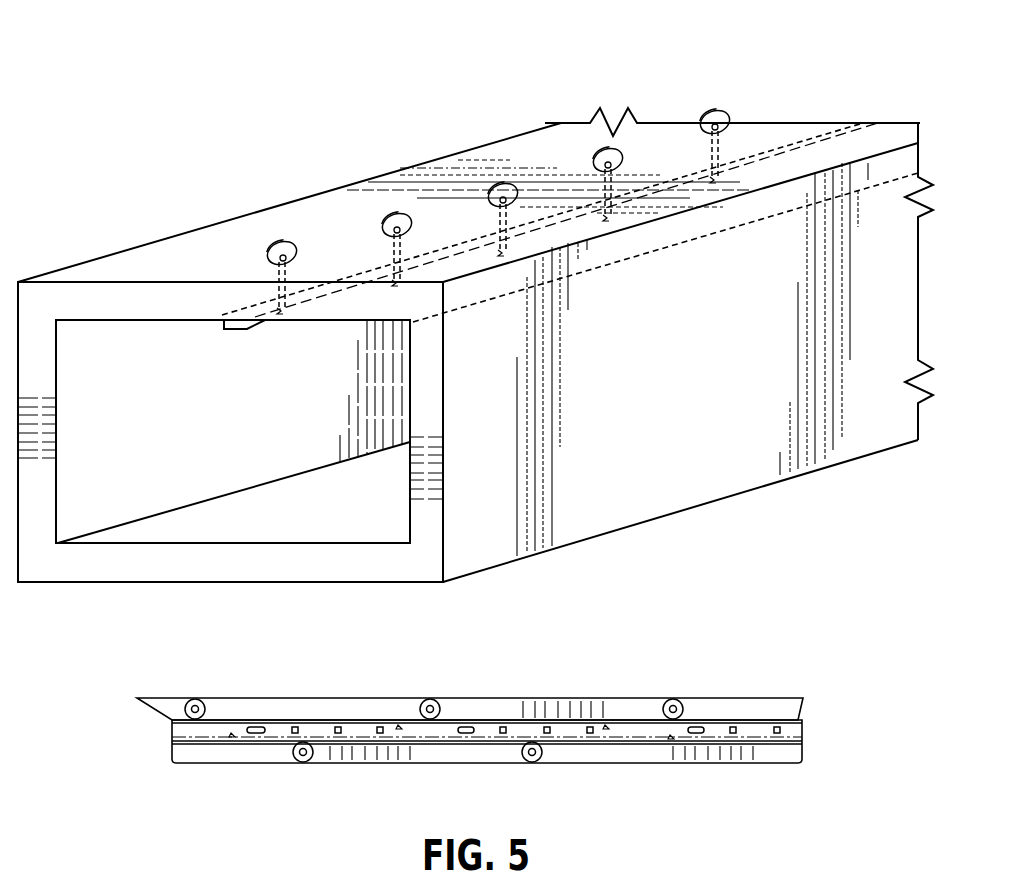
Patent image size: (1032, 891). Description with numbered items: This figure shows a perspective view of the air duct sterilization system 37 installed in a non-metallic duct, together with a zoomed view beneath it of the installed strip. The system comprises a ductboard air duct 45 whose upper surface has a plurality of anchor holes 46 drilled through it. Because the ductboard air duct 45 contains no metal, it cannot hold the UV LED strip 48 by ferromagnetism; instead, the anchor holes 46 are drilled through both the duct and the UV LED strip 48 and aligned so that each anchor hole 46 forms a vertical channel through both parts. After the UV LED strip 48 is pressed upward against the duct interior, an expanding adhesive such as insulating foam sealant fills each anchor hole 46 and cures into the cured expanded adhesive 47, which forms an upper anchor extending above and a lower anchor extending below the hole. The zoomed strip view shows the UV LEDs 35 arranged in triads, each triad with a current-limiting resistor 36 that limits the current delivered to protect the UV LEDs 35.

The air duct sterilization system 37 is at (279, 52).
The ductboard air duct 45 is at (112, 258).
The anchor hole 46 is at (280, 275).
The cured expanded adhesive 47 is at (280, 250).
The UV LED strip 48 is at (138, 730).
The current-limiting resistor 36 is at (255, 724).
The UV LED 35 is at (295, 725).